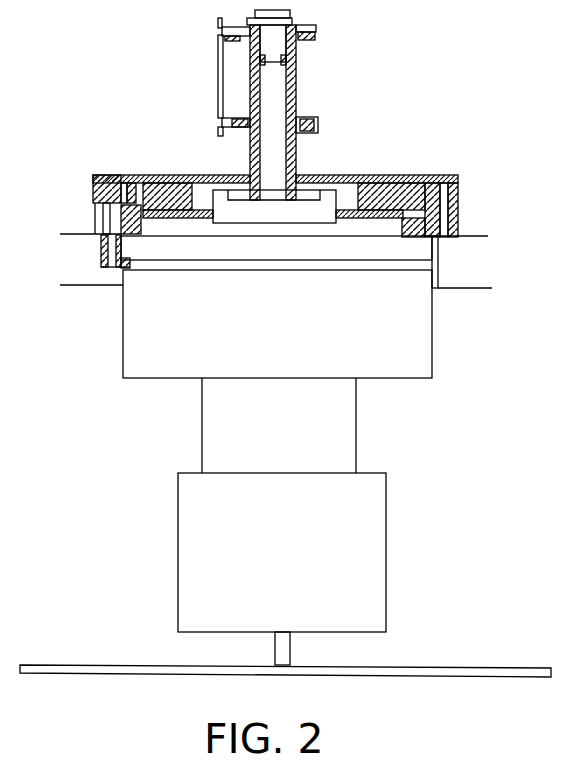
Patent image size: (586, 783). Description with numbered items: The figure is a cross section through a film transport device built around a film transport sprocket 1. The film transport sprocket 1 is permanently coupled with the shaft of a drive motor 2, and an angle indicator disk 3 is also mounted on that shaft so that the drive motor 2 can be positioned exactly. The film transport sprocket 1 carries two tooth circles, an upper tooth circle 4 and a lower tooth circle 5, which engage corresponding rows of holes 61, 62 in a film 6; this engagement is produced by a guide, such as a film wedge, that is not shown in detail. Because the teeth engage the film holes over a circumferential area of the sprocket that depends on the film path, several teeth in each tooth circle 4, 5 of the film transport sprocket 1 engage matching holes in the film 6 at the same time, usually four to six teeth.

The film transport sprocket 1 is at (296, 63).
The drive motor 2 is at (380, 540).
The angle indicator disk 3 is at (441, 672).
The upper tooth circle 4 is at (316, 28).
The lower tooth circle 5 is at (318, 125).
The film 6 is at (222, 62).
The row of holes 61 is at (220, 32).
The row of holes 62 is at (222, 123).